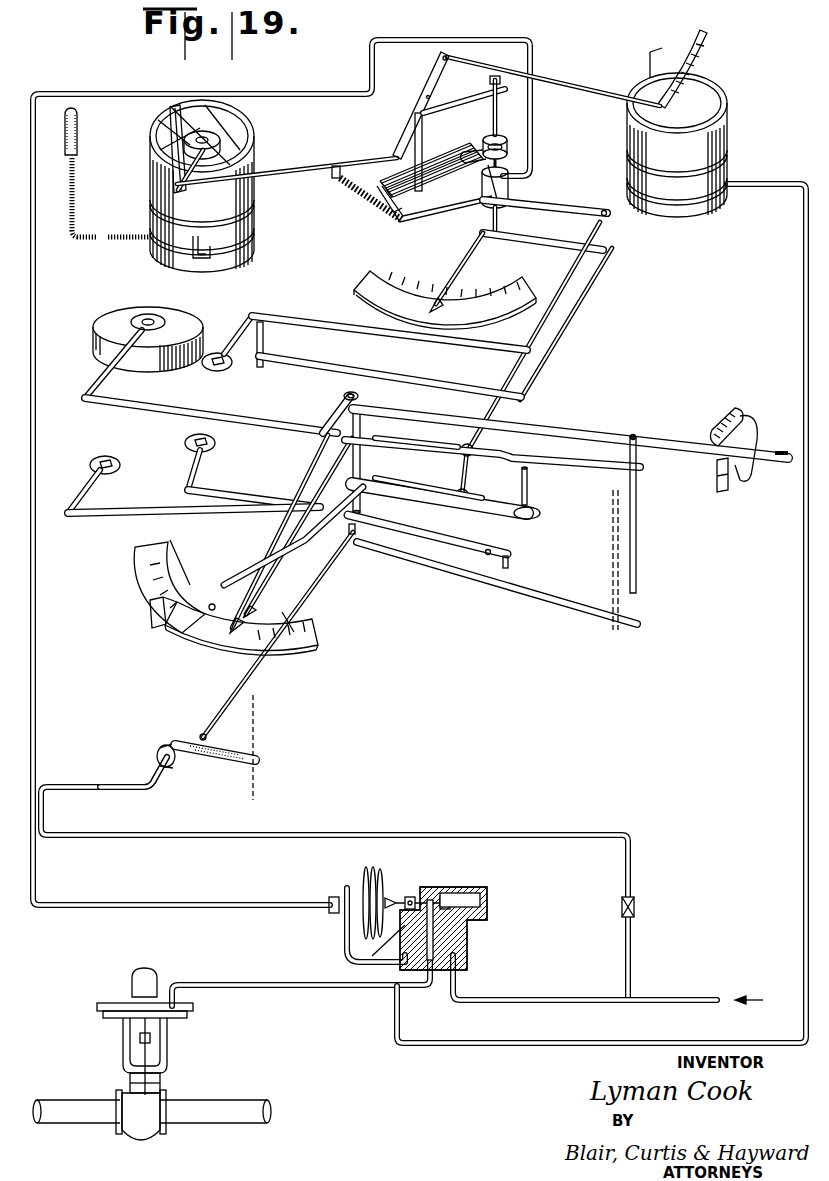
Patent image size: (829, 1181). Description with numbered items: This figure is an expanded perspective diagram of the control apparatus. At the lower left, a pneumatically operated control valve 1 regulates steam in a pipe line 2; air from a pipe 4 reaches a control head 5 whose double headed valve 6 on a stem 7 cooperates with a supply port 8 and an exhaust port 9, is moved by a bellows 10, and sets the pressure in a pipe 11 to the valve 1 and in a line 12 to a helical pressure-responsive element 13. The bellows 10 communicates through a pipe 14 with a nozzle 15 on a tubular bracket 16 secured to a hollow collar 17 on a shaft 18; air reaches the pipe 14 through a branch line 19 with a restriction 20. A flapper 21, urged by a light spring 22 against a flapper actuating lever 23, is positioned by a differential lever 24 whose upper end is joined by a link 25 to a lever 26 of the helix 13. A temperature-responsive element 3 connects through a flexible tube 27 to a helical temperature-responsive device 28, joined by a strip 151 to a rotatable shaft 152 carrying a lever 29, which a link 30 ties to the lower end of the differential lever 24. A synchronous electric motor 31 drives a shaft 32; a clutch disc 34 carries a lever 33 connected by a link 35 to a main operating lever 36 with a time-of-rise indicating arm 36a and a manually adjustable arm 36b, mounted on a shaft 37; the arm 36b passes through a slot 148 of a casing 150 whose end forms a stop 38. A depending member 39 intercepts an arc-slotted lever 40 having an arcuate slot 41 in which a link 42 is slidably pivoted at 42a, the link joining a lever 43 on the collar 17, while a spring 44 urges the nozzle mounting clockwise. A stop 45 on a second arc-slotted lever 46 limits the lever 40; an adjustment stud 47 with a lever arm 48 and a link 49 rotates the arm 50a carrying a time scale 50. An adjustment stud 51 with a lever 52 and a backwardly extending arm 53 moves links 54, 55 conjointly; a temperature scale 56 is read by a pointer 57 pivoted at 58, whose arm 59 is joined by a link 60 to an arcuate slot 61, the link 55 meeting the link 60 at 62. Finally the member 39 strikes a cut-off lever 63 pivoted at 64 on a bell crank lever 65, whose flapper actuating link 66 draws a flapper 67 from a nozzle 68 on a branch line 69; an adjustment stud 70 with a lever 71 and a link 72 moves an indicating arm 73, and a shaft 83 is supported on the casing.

The control valve 1 is at (120, 1050).
The pipe line 2 is at (228, 1100).
The temperature-responsive element 3 is at (78, 128).
The pipe 4 is at (693, 998).
The control head 5 is at (468, 940).
The double headed valve 6 is at (412, 895).
The stem 7 is at (400, 896).
The supply port 8 is at (440, 895).
The exhaust port 9 is at (388, 936).
The bellows 10 is at (362, 878).
The pipe 11 is at (258, 985).
The line 12 is at (766, 187).
The helical pressure-responsive element 13 is at (730, 120).
The pipe 14 is at (290, 92).
The nozzle 15 is at (418, 190).
The tubular bracket 16 is at (428, 212).
The hollow collar 17 is at (510, 192).
The shaft 18 is at (488, 216).
The branch line 19 is at (150, 833).
The restriction 20 is at (636, 907).
The flapper 21 is at (440, 160).
The light spring 22 is at (500, 138).
The flapper actuating lever 23 is at (445, 100).
The differential lever 24 is at (405, 138).
The link 25 is at (578, 90).
The lever 26 is at (690, 48).
The flexible tube 27 is at (112, 233).
The helical temperature-responsive device 28 is at (256, 207).
The lever 29 is at (175, 160).
The link 30 is at (283, 172).
The synchronous electric motor 31 is at (182, 320).
The shaft 32 is at (150, 318).
The lever 33 is at (100, 370).
The clutch disc 34 is at (125, 318).
The link 35 is at (160, 412).
The main operating lever 36 is at (340, 402).
The time-of-rise indicating arm 36a is at (283, 520).
The manually adjustable arm 36b is at (688, 428).
The shaft 37 is at (350, 458).
The stop 38 is at (745, 438).
The depending member 39 is at (638, 527).
The arc-slotted lever 40 is at (555, 462).
The arcuate slot 41 is at (410, 442).
The link 42 is at (503, 376).
The pivot 42a is at (463, 444).
The lever 43 is at (560, 208).
The spring 44 is at (365, 196).
The stop 45 is at (530, 488).
The arc-slotted lever 46 is at (521, 518).
The adjustment stud 47 is at (195, 436).
The lever arm 48 is at (195, 466).
The link 49 is at (230, 498).
The time scale 50 is at (218, 626).
The arm 50a is at (303, 545).
The adjustment stud 51 is at (228, 370).
The lever 52 is at (238, 330).
The backwardly extending arm 53 is at (264, 342).
The link 54 is at (332, 330).
The link 55 is at (325, 372).
The temperature scale 56 is at (358, 275).
The pointer 57 is at (455, 275).
The pivot 58 is at (470, 290).
The arm 59 is at (540, 243).
The link 60 is at (560, 340).
The arcuate slot 61 is at (405, 486).
The pivot connection 62 is at (528, 398).
The cut-off lever 63 is at (560, 598).
The pivot 64 is at (509, 564).
The bell crank lever 65 is at (412, 535).
The flapper actuating link 66 is at (340, 560).
The flapper 67 is at (215, 758).
The nozzle 68 is at (160, 750).
The branch line 69 is at (80, 787).
The adjustment stud 70 is at (113, 460).
The lever 71 is at (82, 490).
The link 72 is at (128, 520).
The indicating arm 73 is at (225, 580).
The shaft 83 is at (258, 782).
The slot 148 is at (716, 475).
The casing 150 is at (752, 470).
The strip 151 is at (170, 118).
The rotatable shaft 152 is at (230, 145).